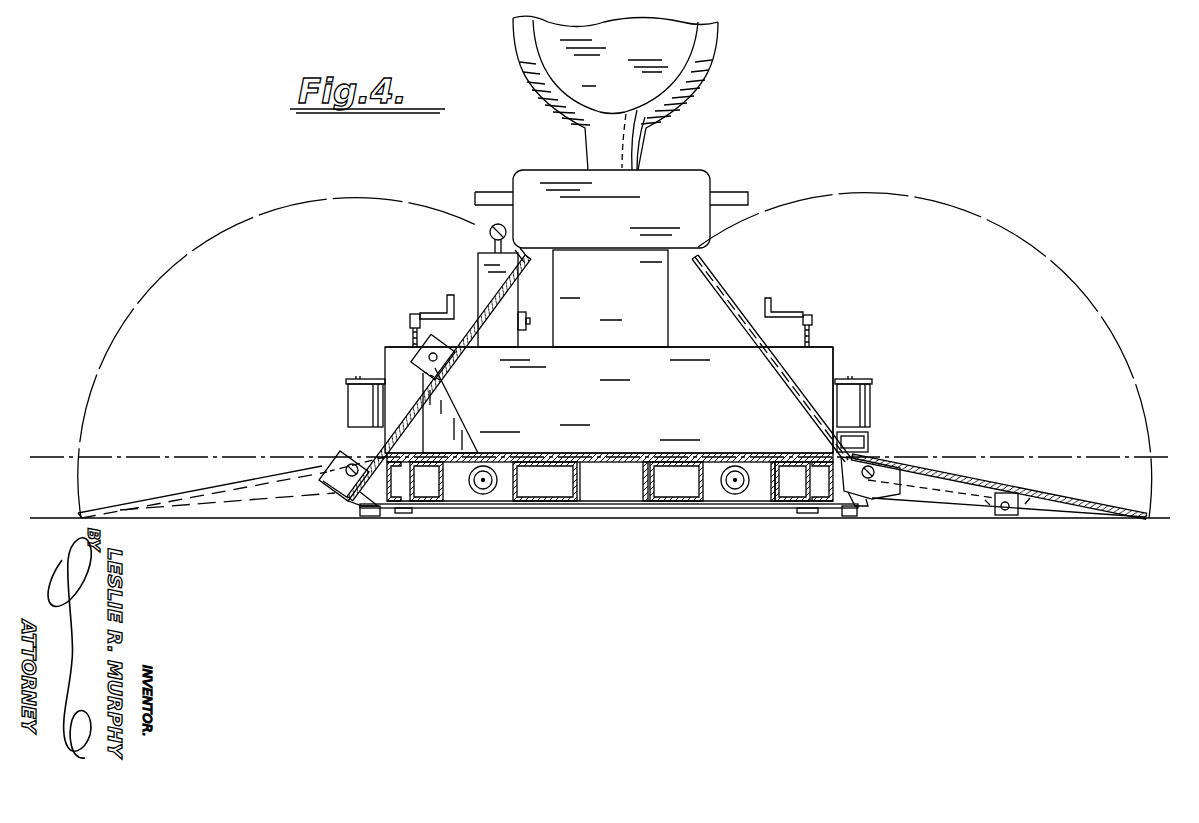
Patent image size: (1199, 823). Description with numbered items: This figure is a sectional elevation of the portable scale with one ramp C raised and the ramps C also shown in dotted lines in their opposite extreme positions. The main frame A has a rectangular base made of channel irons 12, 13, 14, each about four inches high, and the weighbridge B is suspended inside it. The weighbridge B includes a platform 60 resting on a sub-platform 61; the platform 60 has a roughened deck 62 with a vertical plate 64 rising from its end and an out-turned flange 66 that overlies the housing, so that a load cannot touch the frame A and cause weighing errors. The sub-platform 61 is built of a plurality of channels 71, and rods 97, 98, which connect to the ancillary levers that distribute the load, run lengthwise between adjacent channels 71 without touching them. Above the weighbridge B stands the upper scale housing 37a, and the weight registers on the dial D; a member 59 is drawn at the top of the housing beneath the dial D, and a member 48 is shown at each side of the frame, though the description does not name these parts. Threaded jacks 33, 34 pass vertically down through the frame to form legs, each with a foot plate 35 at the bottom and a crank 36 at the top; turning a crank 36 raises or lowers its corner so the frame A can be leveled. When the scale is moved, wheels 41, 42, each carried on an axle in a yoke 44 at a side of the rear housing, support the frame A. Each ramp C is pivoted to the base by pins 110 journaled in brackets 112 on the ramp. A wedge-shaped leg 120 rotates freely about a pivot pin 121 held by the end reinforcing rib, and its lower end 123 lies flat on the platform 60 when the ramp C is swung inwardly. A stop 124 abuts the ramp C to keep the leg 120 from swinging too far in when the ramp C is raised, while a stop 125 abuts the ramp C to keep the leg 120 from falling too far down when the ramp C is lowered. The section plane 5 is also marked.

The section line 5- 5 is at (49, 415).
The channel iron 12 is at (372, 506).
The channel iron 13 is at (695, 508).
The channel iron 14 is at (862, 499).
The threaded jack 33 is at (411, 334).
The threaded jack 34 is at (812, 322).
The foot plate 35 is at (403, 513).
The crank 36 is at (455, 300).
The upper scale housing 37a is at (632, 295).
The wheel 41 is at (328, 495).
The wheel 42 is at (850, 516).
The yoke 44 is at (868, 440).
The support post 48 is at (349, 394).
The cross bar 59 is at (740, 192).
The platform 60 is at (830, 366).
The sub-platform 61 is at (641, 481).
The roughened deck 62 is at (690, 455).
The vertical plate 64 is at (624, 391).
The out-turned flange 66 is at (688, 347).
The channel 71 is at (446, 481).
The rod 97 is at (484, 494).
The rod 98 is at (736, 494).
The pin 110 is at (336, 464).
The bracket 112 is at (352, 442).
The leg 120 is at (466, 419).
The pivot pin 121 is at (441, 357).
The lower end 123 is at (472, 455).
The stop 124 is at (442, 377).
The stop 125 is at (413, 320).
The main frame A is at (530, 508).
The weighbridge B is at (598, 458).
The ramp C is at (492, 300).
The dial D is at (666, 53).